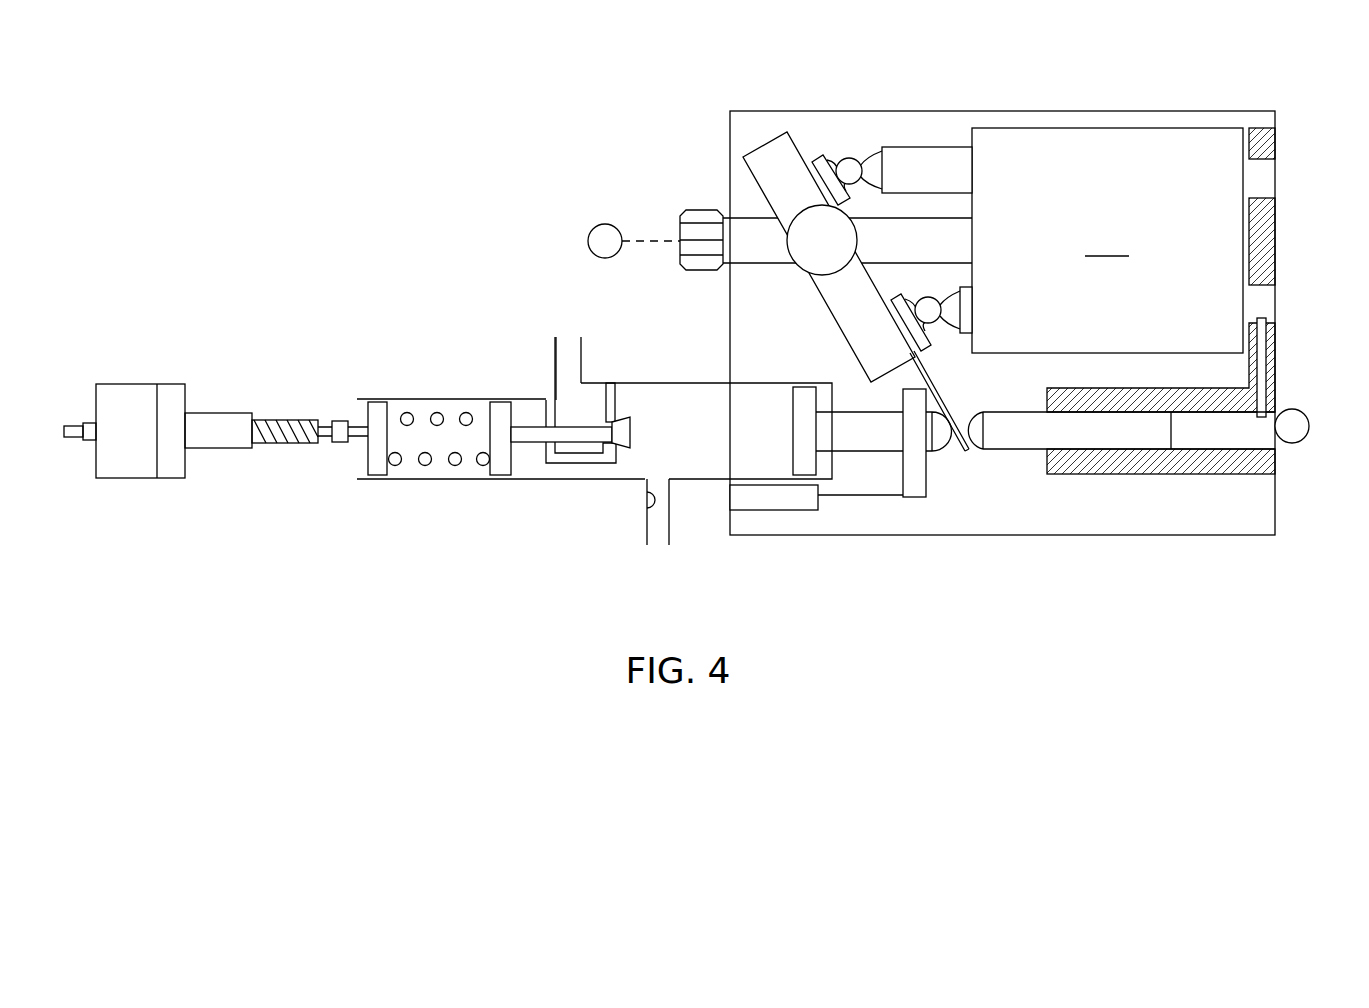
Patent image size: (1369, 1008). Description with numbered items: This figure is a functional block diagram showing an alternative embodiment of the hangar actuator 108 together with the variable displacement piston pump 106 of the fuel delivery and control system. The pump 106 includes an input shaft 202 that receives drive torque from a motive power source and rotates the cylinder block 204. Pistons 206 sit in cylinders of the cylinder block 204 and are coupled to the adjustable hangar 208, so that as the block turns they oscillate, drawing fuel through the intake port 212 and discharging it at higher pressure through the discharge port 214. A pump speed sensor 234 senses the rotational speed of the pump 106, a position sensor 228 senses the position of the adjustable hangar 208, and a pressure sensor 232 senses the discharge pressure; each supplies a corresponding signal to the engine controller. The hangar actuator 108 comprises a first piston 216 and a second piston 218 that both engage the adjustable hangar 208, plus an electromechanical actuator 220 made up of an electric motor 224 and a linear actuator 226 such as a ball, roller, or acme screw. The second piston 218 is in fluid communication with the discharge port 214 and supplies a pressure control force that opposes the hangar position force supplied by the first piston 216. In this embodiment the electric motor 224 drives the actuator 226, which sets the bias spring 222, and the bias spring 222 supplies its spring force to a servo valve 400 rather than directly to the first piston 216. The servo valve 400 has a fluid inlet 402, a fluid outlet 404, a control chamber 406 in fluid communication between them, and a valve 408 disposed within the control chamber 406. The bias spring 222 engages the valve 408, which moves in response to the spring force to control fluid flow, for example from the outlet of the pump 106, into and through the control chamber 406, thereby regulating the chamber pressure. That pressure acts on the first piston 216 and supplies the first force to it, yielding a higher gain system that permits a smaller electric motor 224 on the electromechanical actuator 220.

The variable displacement piston pump 106 is at (1082, 91).
The hangar actuator 108 is at (453, 326).
The input shaft 202 is at (700, 210).
The cylinder block 204 is at (1107, 240).
The pistons 206 is at (968, 170).
The adjustable hangar 208 is at (835, 307).
The intake port 212 is at (1272, 172).
The discharge port 214 is at (1272, 298).
The first piston 216 is at (930, 440).
The second piston 218 is at (1018, 420).
The electromechanical actuator 220 is at (216, 467).
The bias spring 222 is at (425, 466).
The electric motor 224 is at (128, 480).
The actuator 226 is at (218, 413).
The position sensor 228 is at (745, 495).
The pressure sensor 232 is at (1300, 443).
The pump speed sensor 234 is at (605, 224).
The servo valve 400 is at (555, 518).
The fluid inlet 402 is at (568, 337).
The fluid outlet 404 is at (657, 545).
The control chamber 406 is at (647, 396).
The valve 408 is at (636, 430).